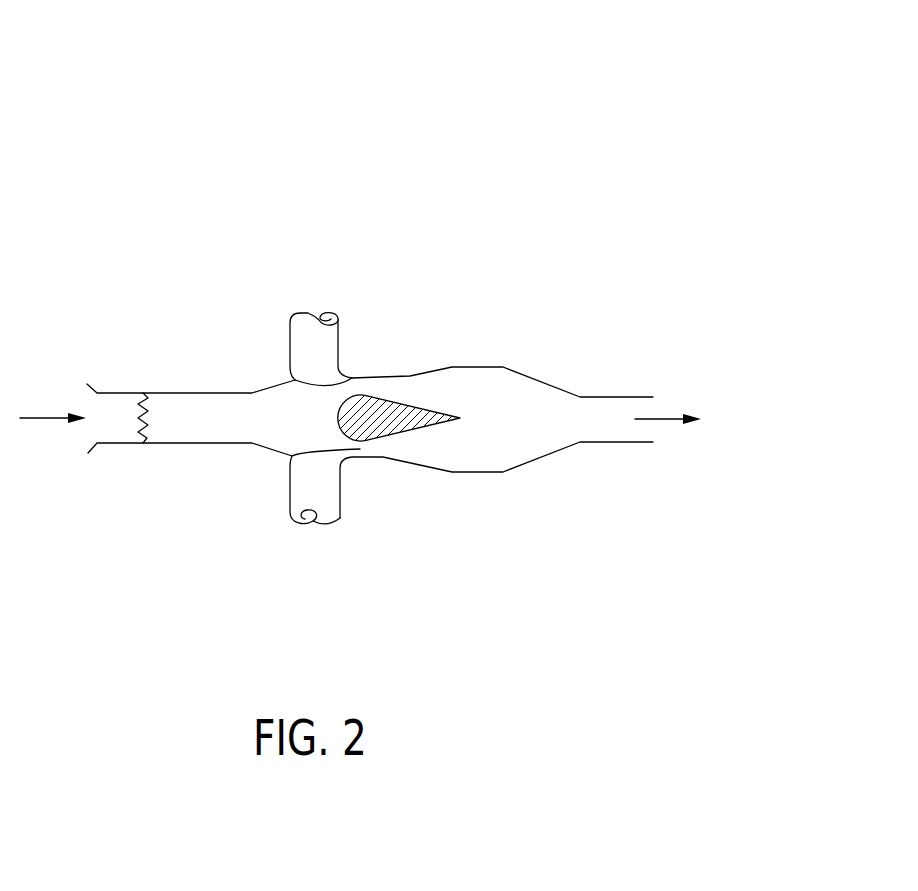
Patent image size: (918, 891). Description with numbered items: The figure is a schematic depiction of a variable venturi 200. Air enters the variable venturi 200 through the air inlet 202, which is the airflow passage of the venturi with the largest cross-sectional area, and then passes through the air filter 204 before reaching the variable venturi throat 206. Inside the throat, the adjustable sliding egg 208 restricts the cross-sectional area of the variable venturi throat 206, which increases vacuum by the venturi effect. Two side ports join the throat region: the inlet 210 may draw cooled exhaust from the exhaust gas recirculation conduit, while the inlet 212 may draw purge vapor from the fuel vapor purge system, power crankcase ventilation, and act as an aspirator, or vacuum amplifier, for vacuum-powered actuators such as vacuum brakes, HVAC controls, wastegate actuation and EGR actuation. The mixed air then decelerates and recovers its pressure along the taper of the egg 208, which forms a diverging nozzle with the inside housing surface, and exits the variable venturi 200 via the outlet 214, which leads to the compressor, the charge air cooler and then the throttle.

The variable venturi 200 is at (78, 102).
The air inlet 202 is at (72, 444).
The air filter 204 is at (143, 405).
The variable venturi throat 206 is at (325, 423).
The adjustable sliding egg 208 is at (388, 427).
The inlet 210 is at (314, 558).
The inlet 212 is at (312, 289).
The outlet 214 is at (670, 415).